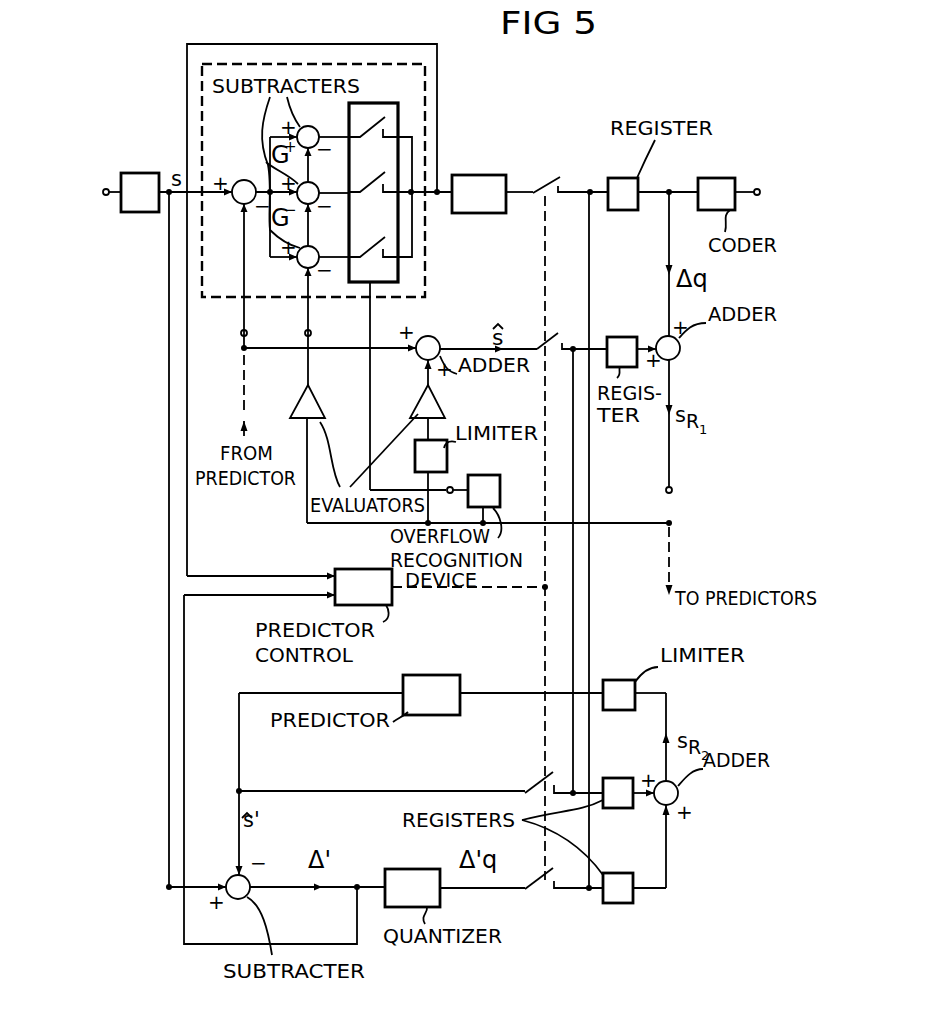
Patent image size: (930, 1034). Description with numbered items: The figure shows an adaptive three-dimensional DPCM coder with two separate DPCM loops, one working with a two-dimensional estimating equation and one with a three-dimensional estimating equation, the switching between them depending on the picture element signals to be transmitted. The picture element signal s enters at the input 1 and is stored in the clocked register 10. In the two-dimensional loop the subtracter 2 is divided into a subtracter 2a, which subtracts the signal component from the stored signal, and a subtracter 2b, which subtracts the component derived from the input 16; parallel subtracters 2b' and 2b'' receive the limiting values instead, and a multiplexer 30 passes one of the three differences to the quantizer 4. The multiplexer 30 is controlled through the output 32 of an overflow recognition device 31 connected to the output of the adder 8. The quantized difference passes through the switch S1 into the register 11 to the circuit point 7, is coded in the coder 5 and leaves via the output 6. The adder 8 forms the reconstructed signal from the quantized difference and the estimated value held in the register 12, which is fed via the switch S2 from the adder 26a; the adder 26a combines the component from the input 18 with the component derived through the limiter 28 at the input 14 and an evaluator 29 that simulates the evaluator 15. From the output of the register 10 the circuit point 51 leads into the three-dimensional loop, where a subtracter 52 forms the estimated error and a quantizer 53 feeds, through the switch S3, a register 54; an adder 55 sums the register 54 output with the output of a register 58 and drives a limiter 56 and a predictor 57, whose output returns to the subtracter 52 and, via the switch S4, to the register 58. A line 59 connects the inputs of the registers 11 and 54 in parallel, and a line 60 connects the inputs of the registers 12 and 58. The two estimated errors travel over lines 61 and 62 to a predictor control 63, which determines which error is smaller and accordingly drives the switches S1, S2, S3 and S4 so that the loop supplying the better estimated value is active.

The input 1 is at (111, 174).
The register 10 is at (160, 124).
The subtracter 2 is at (428, 250).
The subtracter 2a is at (245, 175).
The subtracter 2b is at (323, 246).
The subtracter 2b' is at (323, 182).
The subtracter 2b'' is at (323, 121).
The multiplexer 30 is at (375, 110).
The quantizer 4 is at (505, 115).
The switch S1 is at (548, 170).
The switch S2 is at (553, 325).
The switch S3 is at (546, 865).
The switch S4 is at (546, 769).
The register 11 is at (623, 178).
The circuit point 7 is at (671, 170).
The coder 5 is at (716, 176).
The output 6 is at (757, 178).
The register 12 is at (622, 335).
The first adder 8 is at (676, 350).
The input 14 is at (679, 490).
The terminal 18 is at (268, 310).
The terminal 16 is at (332, 310).
The adder 26a is at (434, 334).
The evaluator 15 is at (316, 403).
The evaluator 29 is at (441, 400).
The limiter 28 is at (443, 481).
The output 32 is at (451, 508).
The overflow recognition device 31 is at (496, 498).
The line 61 is at (189, 407).
The line 62 is at (186, 640).
The predictor control 63 is at (363, 571).
The line 60 is at (479, 538).
The line 59 is at (590, 592).
The predictor 57 is at (349, 679).
The limiter 56 is at (619, 679).
The register 58 is at (618, 777).
The adder 55 is at (678, 793).
The register 54 is at (618, 872).
The circuit point 51 is at (163, 894).
The subtracter 52 is at (238, 904).
The quantizer 53 is at (412, 874).